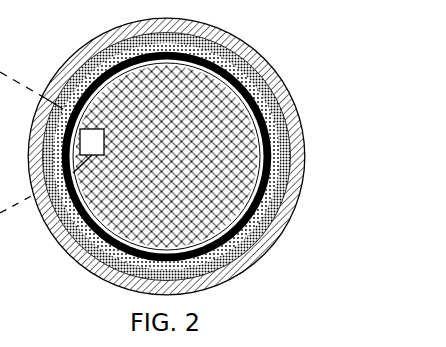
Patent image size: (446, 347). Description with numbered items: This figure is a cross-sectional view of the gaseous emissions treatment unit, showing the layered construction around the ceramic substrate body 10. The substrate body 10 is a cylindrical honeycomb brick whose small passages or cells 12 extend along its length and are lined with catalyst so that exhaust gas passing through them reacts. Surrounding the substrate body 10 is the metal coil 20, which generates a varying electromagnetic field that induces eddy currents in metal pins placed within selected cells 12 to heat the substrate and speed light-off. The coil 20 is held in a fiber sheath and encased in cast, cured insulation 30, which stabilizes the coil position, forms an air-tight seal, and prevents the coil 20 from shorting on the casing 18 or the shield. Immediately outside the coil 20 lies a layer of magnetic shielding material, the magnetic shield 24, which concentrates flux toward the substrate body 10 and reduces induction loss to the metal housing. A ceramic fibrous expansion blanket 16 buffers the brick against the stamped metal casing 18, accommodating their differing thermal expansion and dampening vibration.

The substrate body 10 is at (179, 152).
The cells 12 is at (183, 142).
The expansion blanket 16 is at (120, 43).
The casing 18 is at (43, 210).
The coil 20 is at (278, 135).
The magnetic shield 24 is at (52, 226).
The cast insulation 30 is at (278, 135).